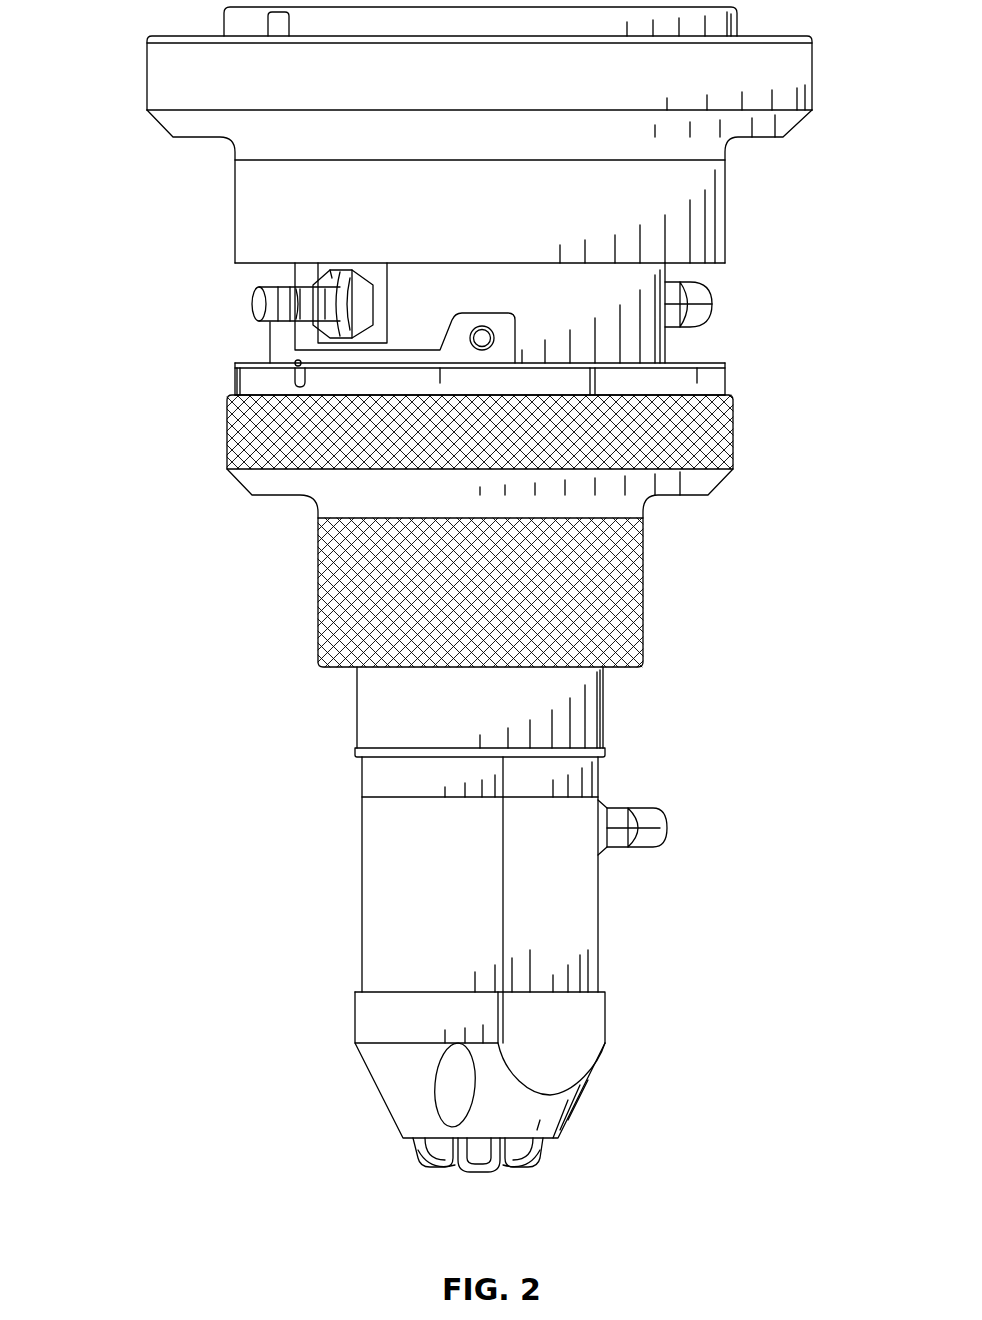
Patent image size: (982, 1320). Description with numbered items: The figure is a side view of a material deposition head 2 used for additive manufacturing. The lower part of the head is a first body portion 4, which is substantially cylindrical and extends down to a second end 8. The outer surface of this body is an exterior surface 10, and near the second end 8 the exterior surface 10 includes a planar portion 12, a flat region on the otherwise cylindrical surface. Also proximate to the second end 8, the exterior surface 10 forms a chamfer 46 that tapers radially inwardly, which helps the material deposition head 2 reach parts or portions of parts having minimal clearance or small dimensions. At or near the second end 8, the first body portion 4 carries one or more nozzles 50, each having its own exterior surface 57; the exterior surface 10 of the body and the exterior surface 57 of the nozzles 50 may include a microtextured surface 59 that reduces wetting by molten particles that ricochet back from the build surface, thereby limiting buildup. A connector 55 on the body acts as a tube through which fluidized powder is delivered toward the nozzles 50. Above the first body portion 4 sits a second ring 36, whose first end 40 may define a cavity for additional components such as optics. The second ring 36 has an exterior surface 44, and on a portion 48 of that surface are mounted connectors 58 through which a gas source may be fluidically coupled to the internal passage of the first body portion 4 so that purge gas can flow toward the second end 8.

The material deposition head 2 is at (801, 1075).
The first body portion 4 is at (320, 844).
The second end 8 is at (593, 1143).
The exterior surface 10 is at (355, 936).
The planar portion 12 is at (587, 903).
The second ring 36 is at (795, 77).
The first end 40 is at (128, 30).
The exterior surface 44 is at (145, 62).
The chamfer 46 is at (390, 1105).
The portion 48 is at (650, 335).
The nozzle 50 is at (480, 1174).
The connector 55 is at (648, 822).
The exterior surface 57 is at (425, 1153).
The connector 58 is at (250, 303).
The microtextured surface 59 is at (407, 1073).